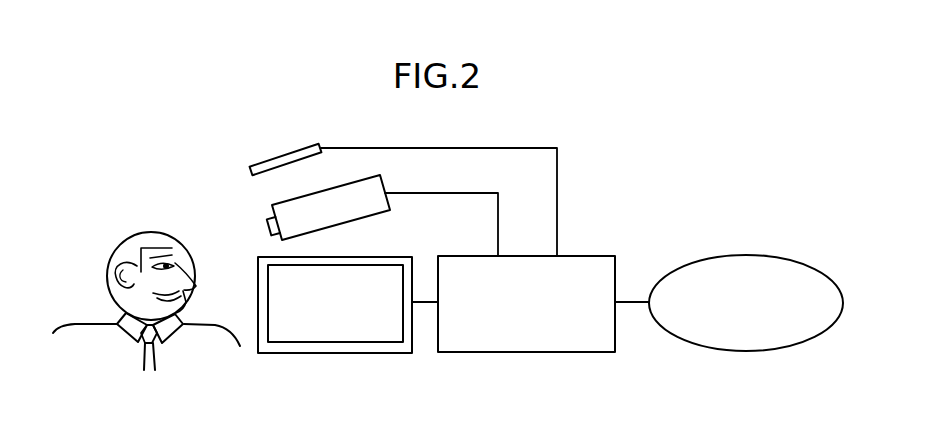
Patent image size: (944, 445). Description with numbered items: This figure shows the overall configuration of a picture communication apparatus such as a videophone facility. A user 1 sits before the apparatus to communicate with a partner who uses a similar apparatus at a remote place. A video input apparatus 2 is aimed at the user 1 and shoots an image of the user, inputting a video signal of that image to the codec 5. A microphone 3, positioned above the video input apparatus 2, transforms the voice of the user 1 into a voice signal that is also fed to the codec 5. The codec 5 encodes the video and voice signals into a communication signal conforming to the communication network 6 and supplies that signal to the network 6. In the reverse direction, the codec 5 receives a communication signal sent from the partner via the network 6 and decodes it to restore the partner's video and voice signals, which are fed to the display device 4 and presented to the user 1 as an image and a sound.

The user 1 is at (140, 232).
The video input apparatus 2 is at (290, 200).
The microphone 3 is at (273, 160).
The display device 4 is at (297, 353).
The codec 5 is at (517, 352).
The communication network 6 is at (745, 352).